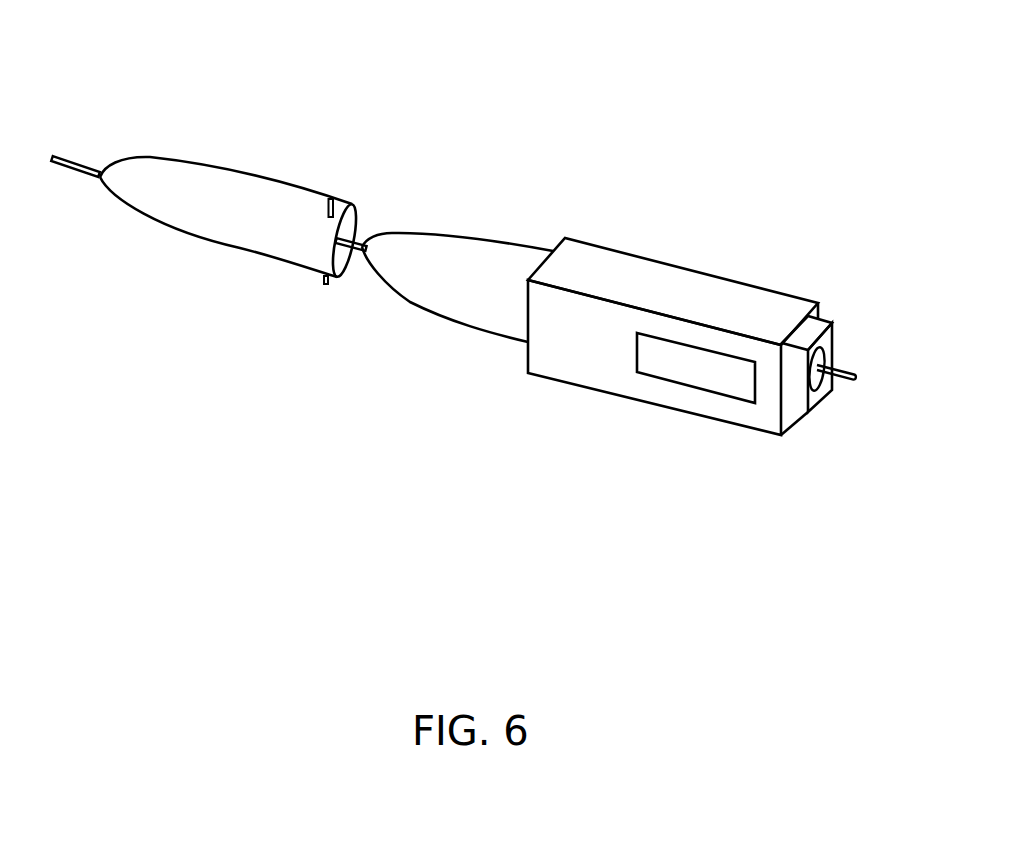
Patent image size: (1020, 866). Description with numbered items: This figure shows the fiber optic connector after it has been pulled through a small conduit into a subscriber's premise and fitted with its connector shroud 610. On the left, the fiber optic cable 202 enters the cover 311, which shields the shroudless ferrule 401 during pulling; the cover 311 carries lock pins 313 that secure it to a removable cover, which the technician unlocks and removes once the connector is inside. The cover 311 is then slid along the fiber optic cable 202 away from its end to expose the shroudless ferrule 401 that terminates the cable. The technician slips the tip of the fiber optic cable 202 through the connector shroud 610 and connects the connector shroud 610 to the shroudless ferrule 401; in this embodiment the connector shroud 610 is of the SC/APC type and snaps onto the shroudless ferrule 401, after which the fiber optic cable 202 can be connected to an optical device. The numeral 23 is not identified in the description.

The fiber optic cable 202 is at (77, 157).
The cover 311 is at (198, 162).
The lock pins 313 is at (332, 198).
The fiber junction 23 is at (305, 302).
The connector shroud 610 is at (842, 192).
The shroudless ferrule 401 is at (857, 377).